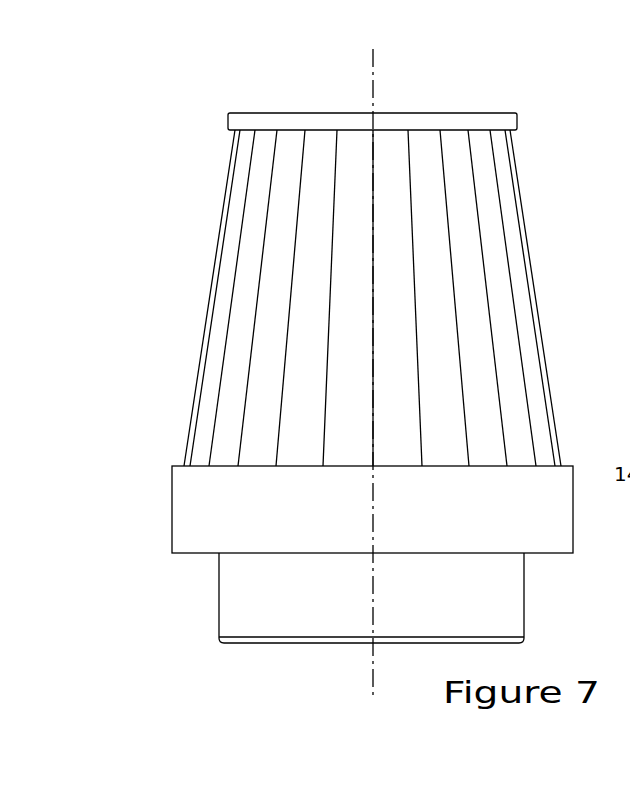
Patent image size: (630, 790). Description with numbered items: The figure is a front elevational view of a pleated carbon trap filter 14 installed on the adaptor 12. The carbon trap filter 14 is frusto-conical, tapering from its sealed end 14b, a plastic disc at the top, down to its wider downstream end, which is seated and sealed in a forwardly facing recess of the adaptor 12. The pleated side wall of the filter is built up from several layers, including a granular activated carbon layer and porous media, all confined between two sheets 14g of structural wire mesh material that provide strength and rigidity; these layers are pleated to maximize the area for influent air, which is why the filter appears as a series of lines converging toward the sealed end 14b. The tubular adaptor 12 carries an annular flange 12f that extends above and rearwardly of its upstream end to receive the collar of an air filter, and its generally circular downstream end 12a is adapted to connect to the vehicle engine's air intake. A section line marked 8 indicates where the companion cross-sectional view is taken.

The section line 8- 8 is at (373, 49).
The adaptor 12 is at (344, 560).
The downstream end 12a is at (524, 644).
The annular flange 12f is at (318, 529).
The carbon trap filter 14 is at (379, 262).
The sealed end 14b is at (478, 113).
The sheets of structural wire mesh material 14g is at (490, 273).